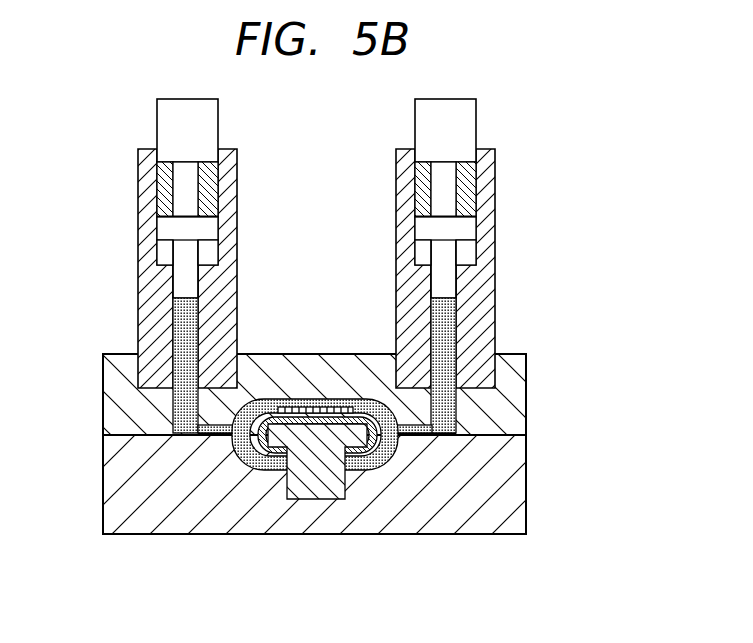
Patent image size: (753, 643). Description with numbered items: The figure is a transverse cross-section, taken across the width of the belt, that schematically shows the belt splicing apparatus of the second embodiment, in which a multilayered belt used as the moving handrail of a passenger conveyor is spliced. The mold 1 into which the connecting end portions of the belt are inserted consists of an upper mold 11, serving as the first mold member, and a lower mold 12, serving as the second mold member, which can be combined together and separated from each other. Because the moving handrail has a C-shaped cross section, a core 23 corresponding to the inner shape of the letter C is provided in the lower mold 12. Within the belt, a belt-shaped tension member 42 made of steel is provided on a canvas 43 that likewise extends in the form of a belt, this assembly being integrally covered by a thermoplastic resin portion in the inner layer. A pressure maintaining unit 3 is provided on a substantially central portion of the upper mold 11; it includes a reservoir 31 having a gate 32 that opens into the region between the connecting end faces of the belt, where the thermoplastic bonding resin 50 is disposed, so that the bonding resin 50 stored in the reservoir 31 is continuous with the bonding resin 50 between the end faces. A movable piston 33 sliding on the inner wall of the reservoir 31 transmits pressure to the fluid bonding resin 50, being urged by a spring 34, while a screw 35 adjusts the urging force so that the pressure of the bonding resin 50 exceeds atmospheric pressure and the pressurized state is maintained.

The mold 1 is at (385, 444).
The upper mold 11 is at (526, 408).
The lower mold 12 is at (363, 484).
The pressure maintaining unit 3 is at (478, 243).
The reservoir 31 is at (458, 322).
The gate 32 is at (412, 438).
The movable piston 33 is at (440, 253).
The spring 34 is at (423, 183).
The screw 35 is at (462, 129).
The tension member 42 is at (313, 404).
The canvas 43 is at (240, 444).
The core 23 is at (297, 482).
The bonding resin 50 is at (183, 332).